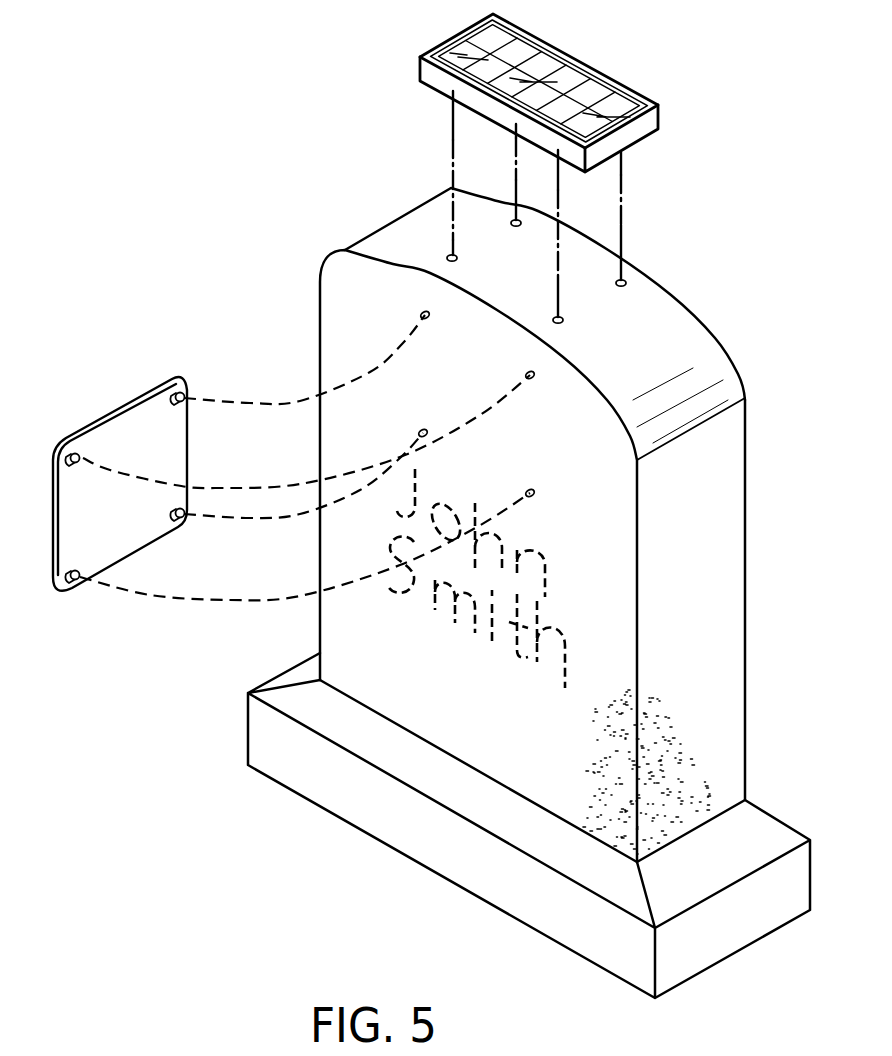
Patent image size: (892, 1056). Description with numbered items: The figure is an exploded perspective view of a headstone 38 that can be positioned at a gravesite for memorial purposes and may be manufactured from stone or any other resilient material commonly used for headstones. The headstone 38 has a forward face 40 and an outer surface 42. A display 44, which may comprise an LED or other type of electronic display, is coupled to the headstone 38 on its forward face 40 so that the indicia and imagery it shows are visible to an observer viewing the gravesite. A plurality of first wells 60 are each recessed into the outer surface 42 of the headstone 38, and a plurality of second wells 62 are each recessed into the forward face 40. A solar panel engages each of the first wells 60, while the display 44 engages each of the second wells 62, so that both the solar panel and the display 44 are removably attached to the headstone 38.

The headstone 38 is at (740, 428).
The forward face 40 is at (600, 793).
The outer surface 42 is at (710, 618).
The display 44 is at (147, 390).
The first wells 60 is at (516, 220).
The second wells 62 is at (423, 433).